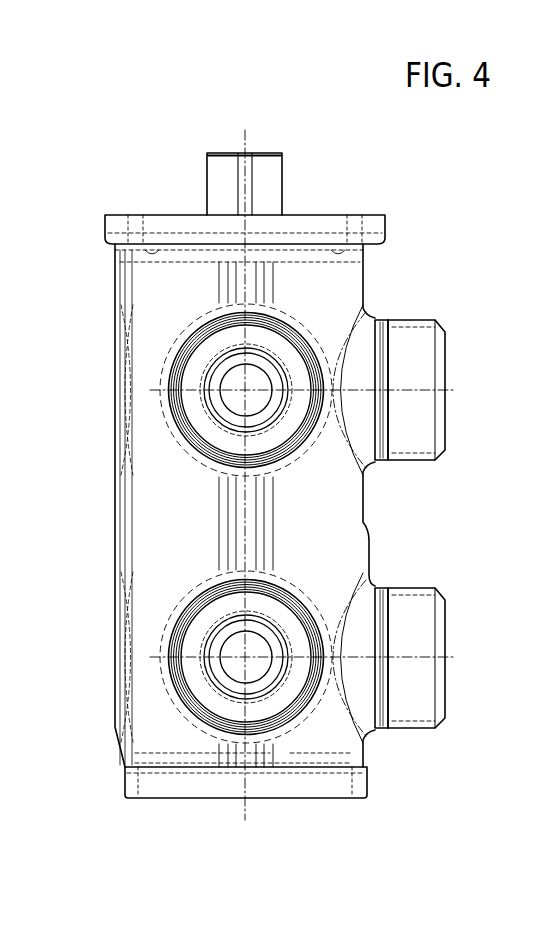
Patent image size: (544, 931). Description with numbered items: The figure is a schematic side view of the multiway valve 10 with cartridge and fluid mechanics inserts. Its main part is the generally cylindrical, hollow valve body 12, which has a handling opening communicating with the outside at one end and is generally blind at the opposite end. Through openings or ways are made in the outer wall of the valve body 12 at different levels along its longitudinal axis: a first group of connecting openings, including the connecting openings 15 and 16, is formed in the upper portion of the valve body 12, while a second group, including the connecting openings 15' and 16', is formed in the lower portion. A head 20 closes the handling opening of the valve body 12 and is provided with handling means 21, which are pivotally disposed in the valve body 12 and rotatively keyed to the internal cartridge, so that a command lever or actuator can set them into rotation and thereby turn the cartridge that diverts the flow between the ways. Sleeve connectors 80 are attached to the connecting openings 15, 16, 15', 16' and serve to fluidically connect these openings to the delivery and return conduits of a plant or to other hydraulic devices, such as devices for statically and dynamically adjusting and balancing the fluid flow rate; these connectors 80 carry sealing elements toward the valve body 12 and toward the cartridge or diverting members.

The multiway valve 10 is at (413, 222).
The valve body 12 is at (113, 280).
The connecting opening 15 is at (172, 390).
The connecting opening 15' is at (174, 657).
The connecting opening 16 is at (459, 390).
The connecting opening 16' is at (461, 658).
The head 20 is at (283, 177).
The handling means 21 is at (218, 180).
The sleeve connector 80 is at (178, 422).